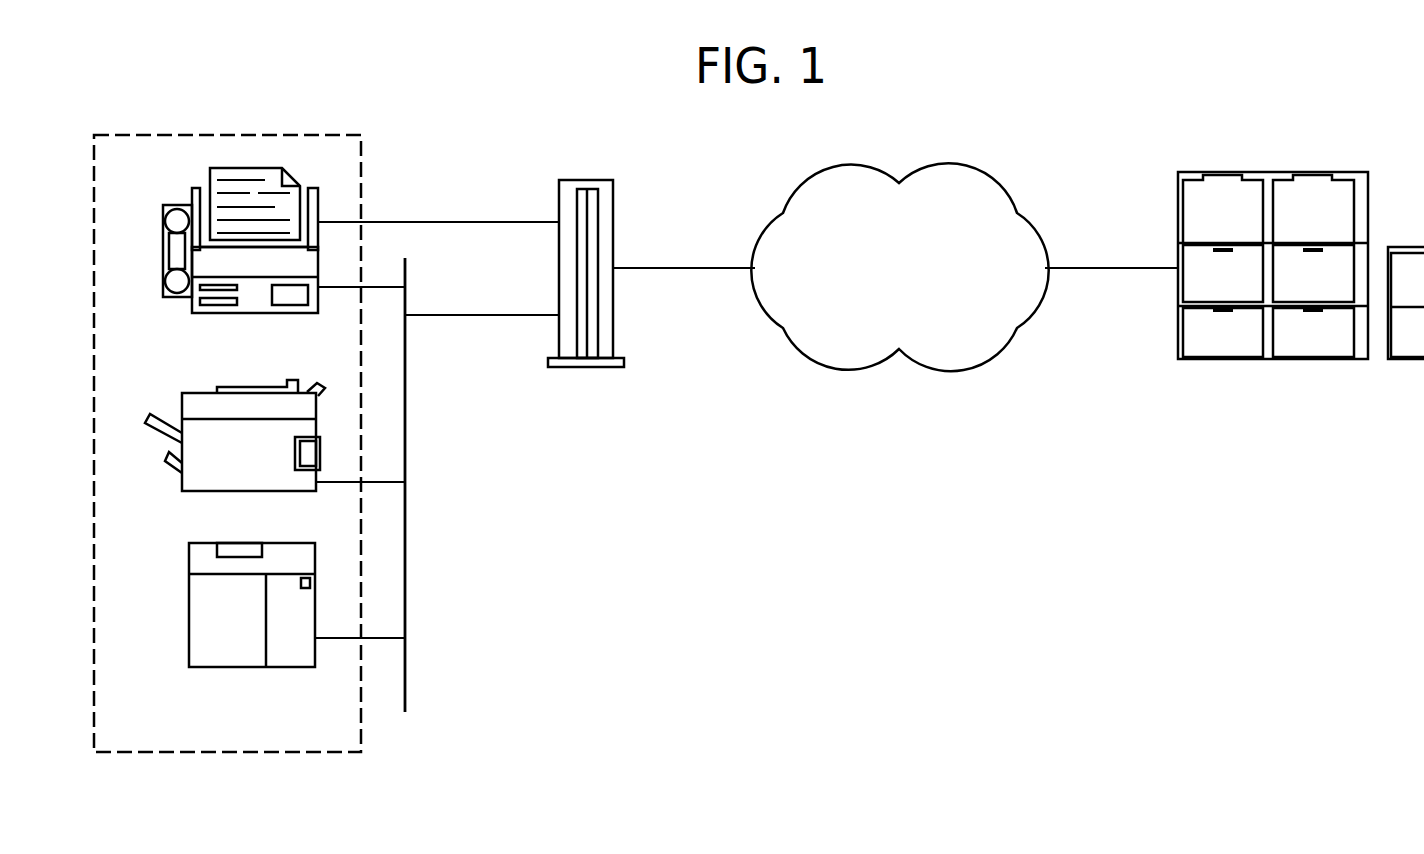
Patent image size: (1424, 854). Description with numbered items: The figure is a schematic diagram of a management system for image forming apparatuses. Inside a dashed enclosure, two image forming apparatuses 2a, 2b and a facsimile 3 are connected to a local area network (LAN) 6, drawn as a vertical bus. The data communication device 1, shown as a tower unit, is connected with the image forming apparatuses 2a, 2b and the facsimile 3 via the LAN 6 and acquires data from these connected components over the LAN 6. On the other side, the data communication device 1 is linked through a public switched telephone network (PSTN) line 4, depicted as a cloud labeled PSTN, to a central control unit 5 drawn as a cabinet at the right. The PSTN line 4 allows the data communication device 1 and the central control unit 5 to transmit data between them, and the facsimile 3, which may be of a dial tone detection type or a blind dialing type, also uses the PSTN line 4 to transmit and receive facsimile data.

The data communication device 1 is at (598, 180).
The image forming apparatus 2a is at (182, 410).
The image forming apparatus 2b is at (189, 557).
The facsimile 3 is at (162, 213).
The public switched telephone network (PSTN) line 4 is at (945, 171).
The central control unit 5 is at (1352, 172).
The local area network (LAN) 6 is at (407, 505).